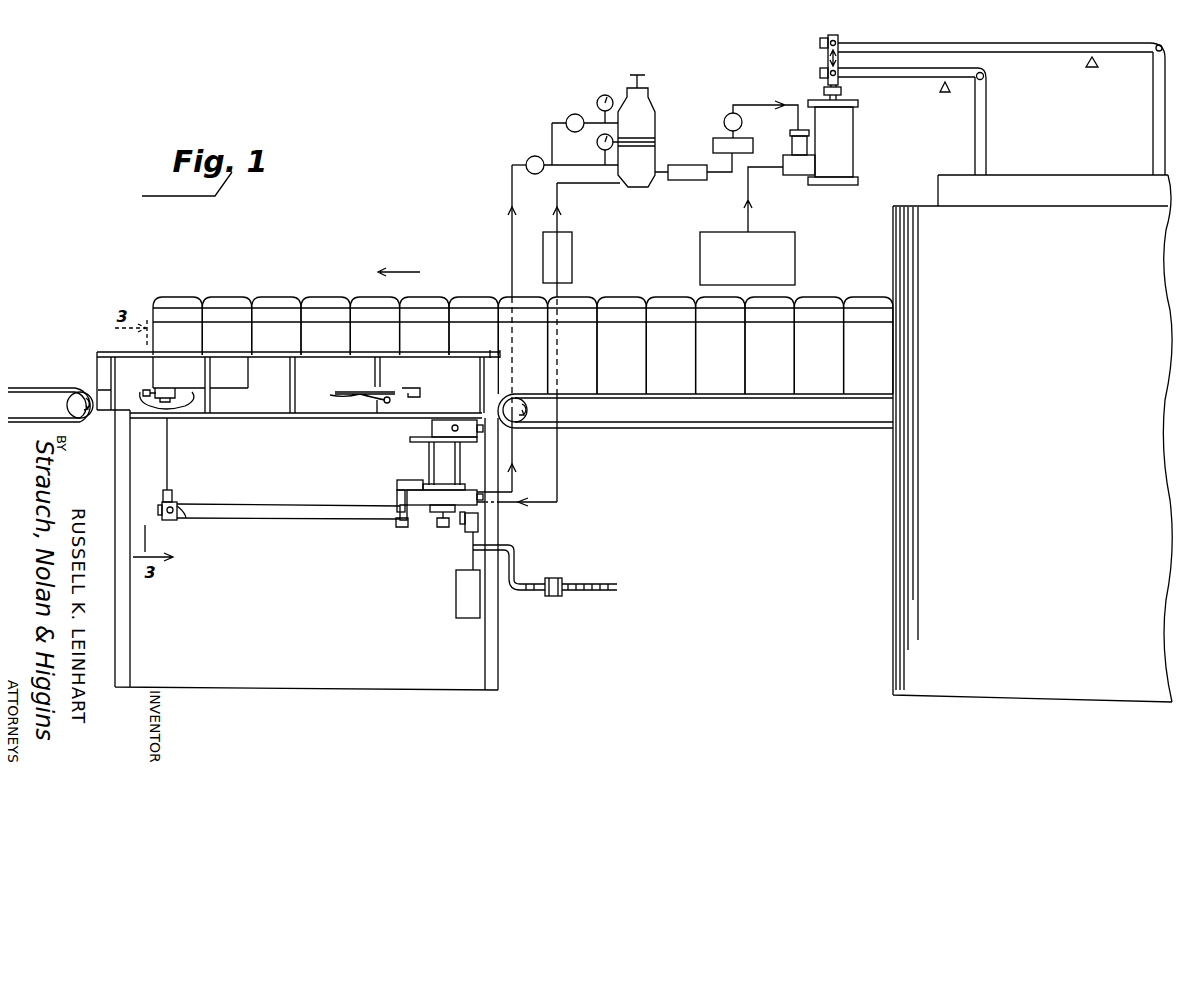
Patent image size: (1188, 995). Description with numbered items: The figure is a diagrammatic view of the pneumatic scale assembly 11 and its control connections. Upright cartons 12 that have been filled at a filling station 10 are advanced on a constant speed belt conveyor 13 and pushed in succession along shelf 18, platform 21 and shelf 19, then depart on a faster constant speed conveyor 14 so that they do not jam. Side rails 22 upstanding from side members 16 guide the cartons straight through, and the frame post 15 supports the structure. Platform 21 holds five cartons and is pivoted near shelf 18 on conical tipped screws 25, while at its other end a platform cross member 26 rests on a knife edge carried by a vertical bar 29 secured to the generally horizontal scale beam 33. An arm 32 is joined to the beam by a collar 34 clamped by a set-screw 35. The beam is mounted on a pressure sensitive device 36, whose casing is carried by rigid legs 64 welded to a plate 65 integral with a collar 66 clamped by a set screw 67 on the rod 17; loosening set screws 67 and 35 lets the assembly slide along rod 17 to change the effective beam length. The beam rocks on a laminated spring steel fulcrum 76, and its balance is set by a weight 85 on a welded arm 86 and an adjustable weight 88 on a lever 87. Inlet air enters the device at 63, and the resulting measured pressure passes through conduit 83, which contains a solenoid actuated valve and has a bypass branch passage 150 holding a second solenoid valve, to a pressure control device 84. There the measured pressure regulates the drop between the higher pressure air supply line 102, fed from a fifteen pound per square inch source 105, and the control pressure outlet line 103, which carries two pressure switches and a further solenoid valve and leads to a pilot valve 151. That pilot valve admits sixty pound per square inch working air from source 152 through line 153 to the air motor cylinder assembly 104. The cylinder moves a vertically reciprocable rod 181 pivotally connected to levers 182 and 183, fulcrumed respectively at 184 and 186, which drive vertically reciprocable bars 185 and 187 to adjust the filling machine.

The filling station 10 is at (993, 250).
The pneumatic scale assembly 11 is at (285, 463).
The cartons 12 is at (170, 335).
The belt conveyor 13 is at (752, 425).
The conveyor 14 is at (14, 392).
The frame post 15 is at (115, 452).
The side members 16 is at (125, 405).
The rod 17 is at (244, 425).
The shelf 18 is at (410, 388).
The shelf 19 is at (146, 390).
The platform 21 is at (190, 392).
The side rails 22 is at (268, 358).
The conical tipped coaxial screws 25 is at (380, 400).
The platform cross member 26 is at (165, 390).
The bar 29 is at (170, 440).
The arm 32 is at (175, 496).
The scale beam 33 is at (298, 512).
The collar 34 is at (186, 512).
The set-screw 35 is at (172, 520).
The pressure sensitive device 36 is at (421, 522).
The inlet conduit connection 63 is at (555, 505).
The legs 64 is at (430, 460).
The plate 65 is at (408, 440).
The collar 66 is at (440, 420).
The set screw 67 is at (457, 425).
The fulcrum 76 is at (397, 486).
The conduit 83 is at (511, 215).
The pressure control device 84 is at (652, 122).
The weight 85 is at (460, 585).
The arm 86 is at (468, 532).
The lever 87 is at (516, 565).
The adjustable weight 88 is at (560, 582).
The air supply line 102 is at (600, 185).
The control pressure outlet line 103 is at (672, 165).
The air motor cylinder assembly 104 is at (864, 130).
The source 105 is at (572, 266).
The branch passage 150 is at (552, 135).
The pilot valve 151 is at (796, 175).
The source 152 is at (795, 253).
The line 153 is at (748, 216).
The vertically reciprocable rod 181 is at (820, 46).
The lever 182 is at (870, 43).
The lever 183 is at (926, 79).
The fulcrum 184 is at (1092, 67).
The vertically reciprocable bar 185 is at (1153, 112).
The fulcrum 186 is at (945, 92).
The vertically reciprocable bar 187 is at (975, 142).